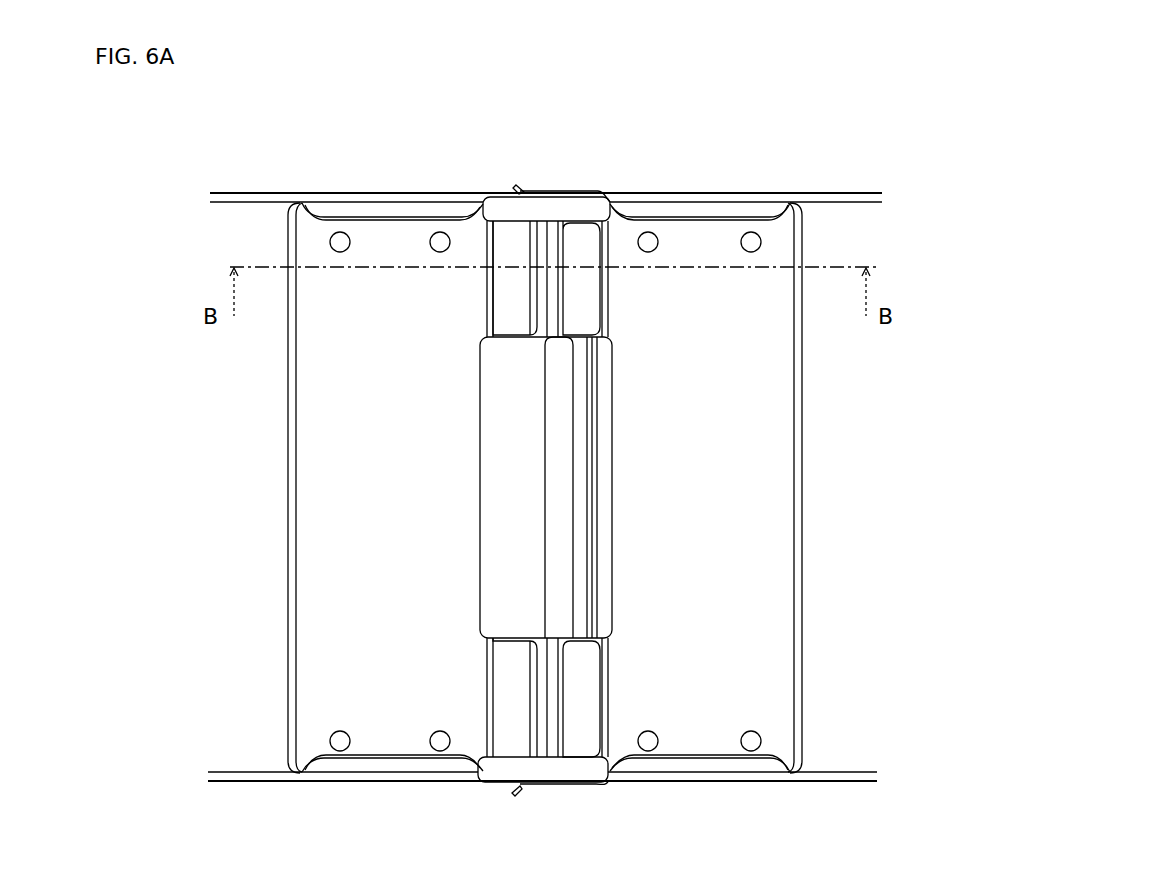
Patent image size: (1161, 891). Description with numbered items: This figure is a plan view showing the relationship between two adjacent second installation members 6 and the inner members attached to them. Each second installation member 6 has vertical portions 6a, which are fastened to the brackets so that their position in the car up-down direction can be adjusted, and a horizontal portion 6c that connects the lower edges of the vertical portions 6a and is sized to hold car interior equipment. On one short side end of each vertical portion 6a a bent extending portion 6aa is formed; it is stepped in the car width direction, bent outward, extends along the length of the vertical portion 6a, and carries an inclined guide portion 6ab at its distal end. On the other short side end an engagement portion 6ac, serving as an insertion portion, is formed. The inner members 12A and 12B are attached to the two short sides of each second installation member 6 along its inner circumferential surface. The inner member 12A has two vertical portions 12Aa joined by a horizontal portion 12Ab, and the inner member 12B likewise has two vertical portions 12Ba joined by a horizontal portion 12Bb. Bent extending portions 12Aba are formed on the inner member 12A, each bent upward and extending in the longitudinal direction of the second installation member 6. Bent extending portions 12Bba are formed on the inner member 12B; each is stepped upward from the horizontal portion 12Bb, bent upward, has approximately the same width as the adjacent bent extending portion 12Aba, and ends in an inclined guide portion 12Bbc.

The second installation member 6 is at (418, 190).
The vertical portion 6a is at (745, 192).
The horizontal portion 6c is at (238, 704).
The bent extending portion 6aa is at (558, 195).
The inclined guide portion 6ab is at (522, 190).
The engagement portion 6ac is at (538, 208).
The inner member 12A is at (760, 425).
The vertical portion 12Aa is at (683, 196).
The horizontal portion 12Ab is at (645, 522).
The bent extending portion 12Aba is at (585, 296).
The inner member 12B is at (440, 390).
The vertical portion 12Ba is at (333, 196).
The horizontal portion 12Bb is at (318, 425).
The bent extending portion 12Bba is at (505, 296).
The inclined guide portion 12Bbc is at (526, 316).